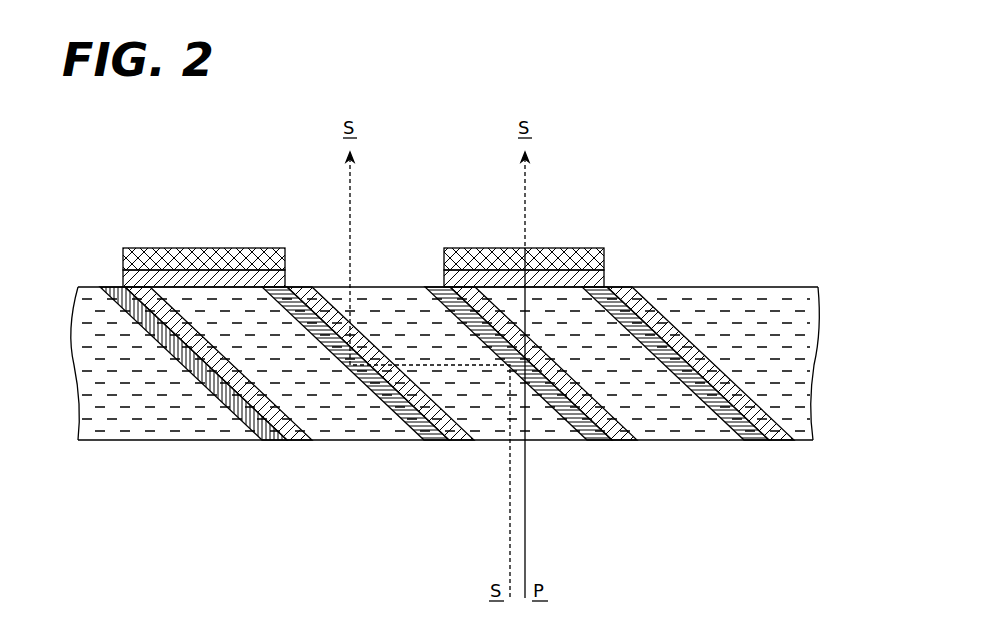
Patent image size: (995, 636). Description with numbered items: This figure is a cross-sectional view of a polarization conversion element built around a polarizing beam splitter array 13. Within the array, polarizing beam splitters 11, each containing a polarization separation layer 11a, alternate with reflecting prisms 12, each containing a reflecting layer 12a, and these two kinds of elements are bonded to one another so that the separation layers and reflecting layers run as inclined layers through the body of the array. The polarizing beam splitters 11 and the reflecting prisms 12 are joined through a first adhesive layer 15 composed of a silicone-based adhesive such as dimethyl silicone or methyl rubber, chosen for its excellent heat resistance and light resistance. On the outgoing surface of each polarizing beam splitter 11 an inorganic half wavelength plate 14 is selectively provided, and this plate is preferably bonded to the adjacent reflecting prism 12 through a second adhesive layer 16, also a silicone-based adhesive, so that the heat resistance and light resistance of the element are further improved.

The polarizing beam splitter 11 is at (518, 403).
The polarization separation layer 11a is at (475, 482).
The reflecting prism 12 is at (358, 403).
The reflecting layer 12a is at (317, 482).
The polarizing beam splitter array 13 is at (830, 287).
The inorganic ½ wavelength plate 14 is at (603, 248).
The first adhesive layer 15 is at (687, 347).
The second adhesive layer 16 is at (604, 280).